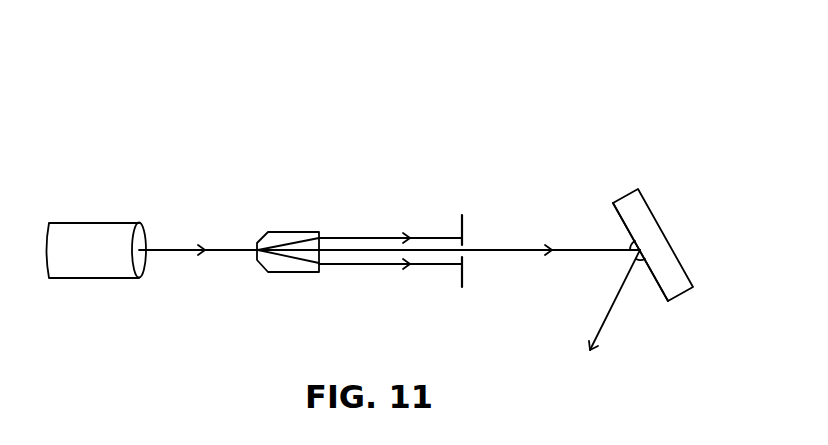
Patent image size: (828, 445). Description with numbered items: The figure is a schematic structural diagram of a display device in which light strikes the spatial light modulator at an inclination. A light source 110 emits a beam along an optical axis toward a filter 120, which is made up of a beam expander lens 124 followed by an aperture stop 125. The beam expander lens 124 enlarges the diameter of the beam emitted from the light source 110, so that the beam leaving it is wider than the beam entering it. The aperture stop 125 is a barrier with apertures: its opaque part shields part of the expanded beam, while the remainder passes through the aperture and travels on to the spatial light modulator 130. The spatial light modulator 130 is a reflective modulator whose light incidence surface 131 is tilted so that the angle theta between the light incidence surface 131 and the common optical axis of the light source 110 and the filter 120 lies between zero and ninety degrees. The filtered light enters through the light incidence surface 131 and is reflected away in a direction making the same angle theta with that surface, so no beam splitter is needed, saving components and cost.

The light source 110 is at (90, 243).
The filter 120 is at (492, 147).
The beam expander lens 124 is at (284, 231).
The aperture stop 125 is at (462, 222).
The spatial light modulator 130 is at (624, 192).
The light incidence surface 131 is at (660, 282).